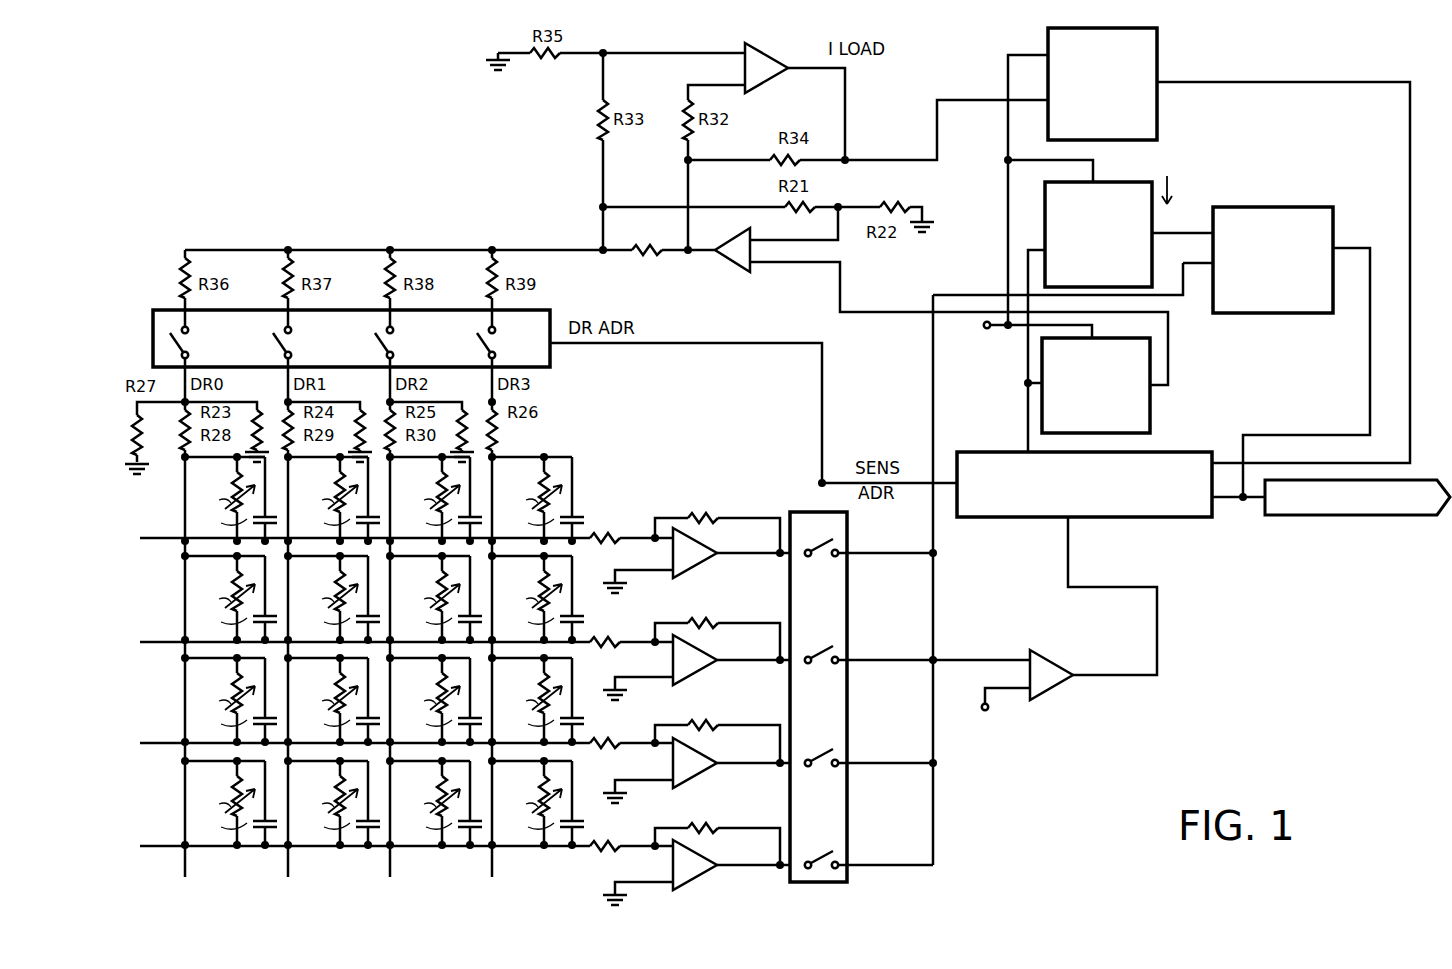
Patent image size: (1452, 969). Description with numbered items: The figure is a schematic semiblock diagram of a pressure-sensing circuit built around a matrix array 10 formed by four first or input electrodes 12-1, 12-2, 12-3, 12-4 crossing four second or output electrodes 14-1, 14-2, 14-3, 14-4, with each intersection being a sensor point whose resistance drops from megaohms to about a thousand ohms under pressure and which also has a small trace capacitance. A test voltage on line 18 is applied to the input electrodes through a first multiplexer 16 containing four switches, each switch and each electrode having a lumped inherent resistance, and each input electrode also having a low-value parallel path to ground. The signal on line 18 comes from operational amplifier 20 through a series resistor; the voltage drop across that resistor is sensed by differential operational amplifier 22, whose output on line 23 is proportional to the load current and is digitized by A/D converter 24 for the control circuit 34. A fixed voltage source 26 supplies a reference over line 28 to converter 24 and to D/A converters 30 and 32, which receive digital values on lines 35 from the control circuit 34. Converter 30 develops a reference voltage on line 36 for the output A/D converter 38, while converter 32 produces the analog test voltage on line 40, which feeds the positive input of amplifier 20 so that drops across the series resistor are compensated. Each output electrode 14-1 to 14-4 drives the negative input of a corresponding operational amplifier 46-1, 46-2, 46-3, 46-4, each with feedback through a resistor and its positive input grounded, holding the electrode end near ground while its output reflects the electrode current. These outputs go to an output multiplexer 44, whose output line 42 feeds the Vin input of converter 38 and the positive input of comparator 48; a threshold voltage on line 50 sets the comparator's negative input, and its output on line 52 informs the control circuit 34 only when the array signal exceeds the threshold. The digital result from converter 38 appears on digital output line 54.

The matrix array 10 is at (355, 866).
The first electrode 12-1 is at (176, 480).
The first electrode 12-2 is at (183, 512).
The first electrode 12-3 is at (392, 864).
The first electrode 12-4 is at (497, 440).
The second electrode 14-1 is at (158, 538).
The second electrode 14-2 is at (158, 642).
The second electrode 14-3 is at (158, 743).
The second electrode 14-4 is at (158, 846).
The first multiplexer 16 is at (164, 310).
The Vtest line 18 is at (518, 250).
The operational amplifier 20 is at (728, 265).
The operational amplifier 22 is at (768, 62).
The output line 23 is at (848, 116).
The A/D converter 24 is at (1158, 40).
The fixed voltage source 26 is at (1000, 330).
The line 28 is at (1008, 134).
The D/A converter 30 is at (1120, 182).
The D/A converter 32 is at (1150, 412).
The control circuit 34 is at (1177, 518).
The lines 35 is at (1022, 366).
The line 36 is at (1172, 237).
The output A/D converter 38 is at (1333, 212).
The line 40 is at (1168, 328).
The output line 42 is at (933, 408).
The output multiplexer 44 is at (850, 816).
The operational amplifier 46-1 is at (712, 535).
The operational amplifier 46-2 is at (712, 642).
The operational amplifier 46-3 is at (712, 745).
The operational amplifier 46-4 is at (712, 847).
The comparator 48 is at (1060, 688).
The line 50 is at (1005, 700).
The line 52 is at (1160, 612).
The digital output line 54 is at (1246, 503).